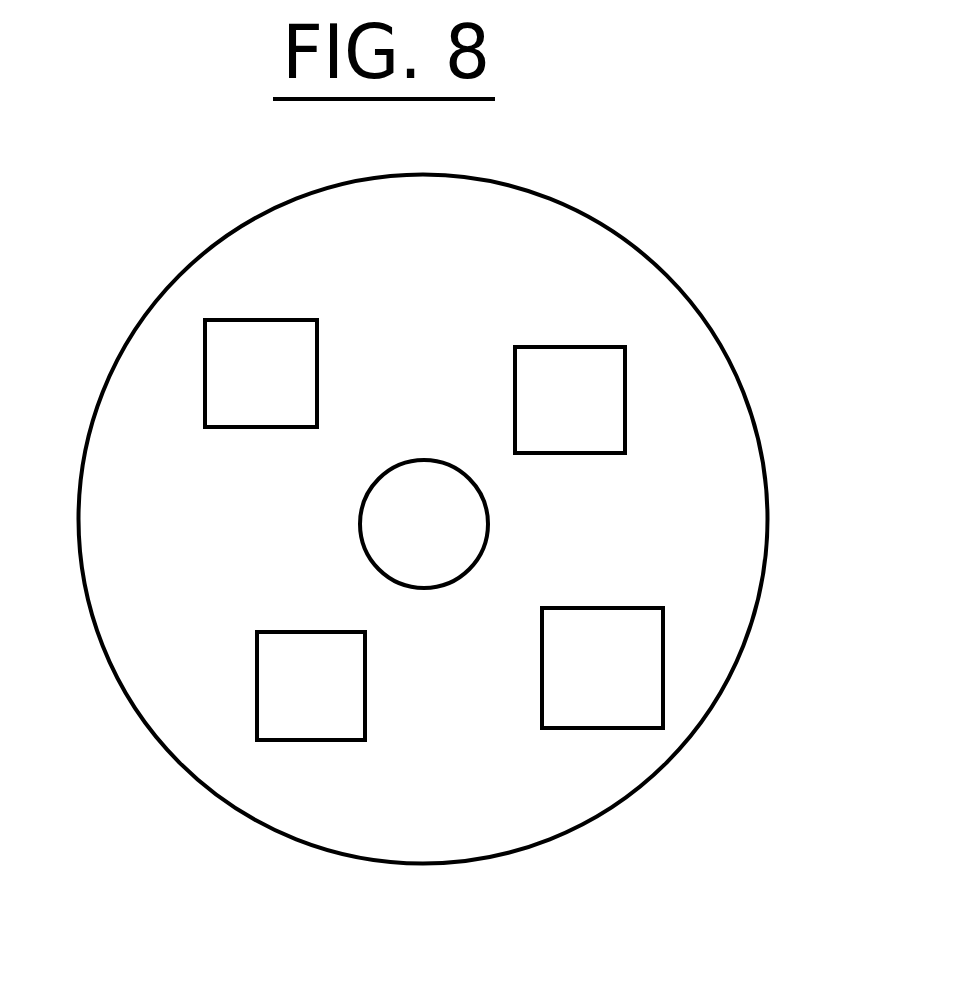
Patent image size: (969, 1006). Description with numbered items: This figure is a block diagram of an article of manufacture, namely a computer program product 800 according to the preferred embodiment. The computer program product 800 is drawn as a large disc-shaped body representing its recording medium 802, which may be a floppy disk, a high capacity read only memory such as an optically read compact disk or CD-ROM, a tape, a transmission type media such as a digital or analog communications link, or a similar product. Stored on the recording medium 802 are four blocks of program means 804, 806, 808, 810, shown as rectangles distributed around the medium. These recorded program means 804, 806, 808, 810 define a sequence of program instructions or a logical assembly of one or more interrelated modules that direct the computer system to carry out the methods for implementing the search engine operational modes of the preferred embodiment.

The computer program product 800 is at (718, 297).
The recording medium 802 is at (140, 323).
The program means 804 is at (570, 400).
The program means 806 is at (602, 668).
The program means 808 is at (311, 686).
The program means 810 is at (261, 373).